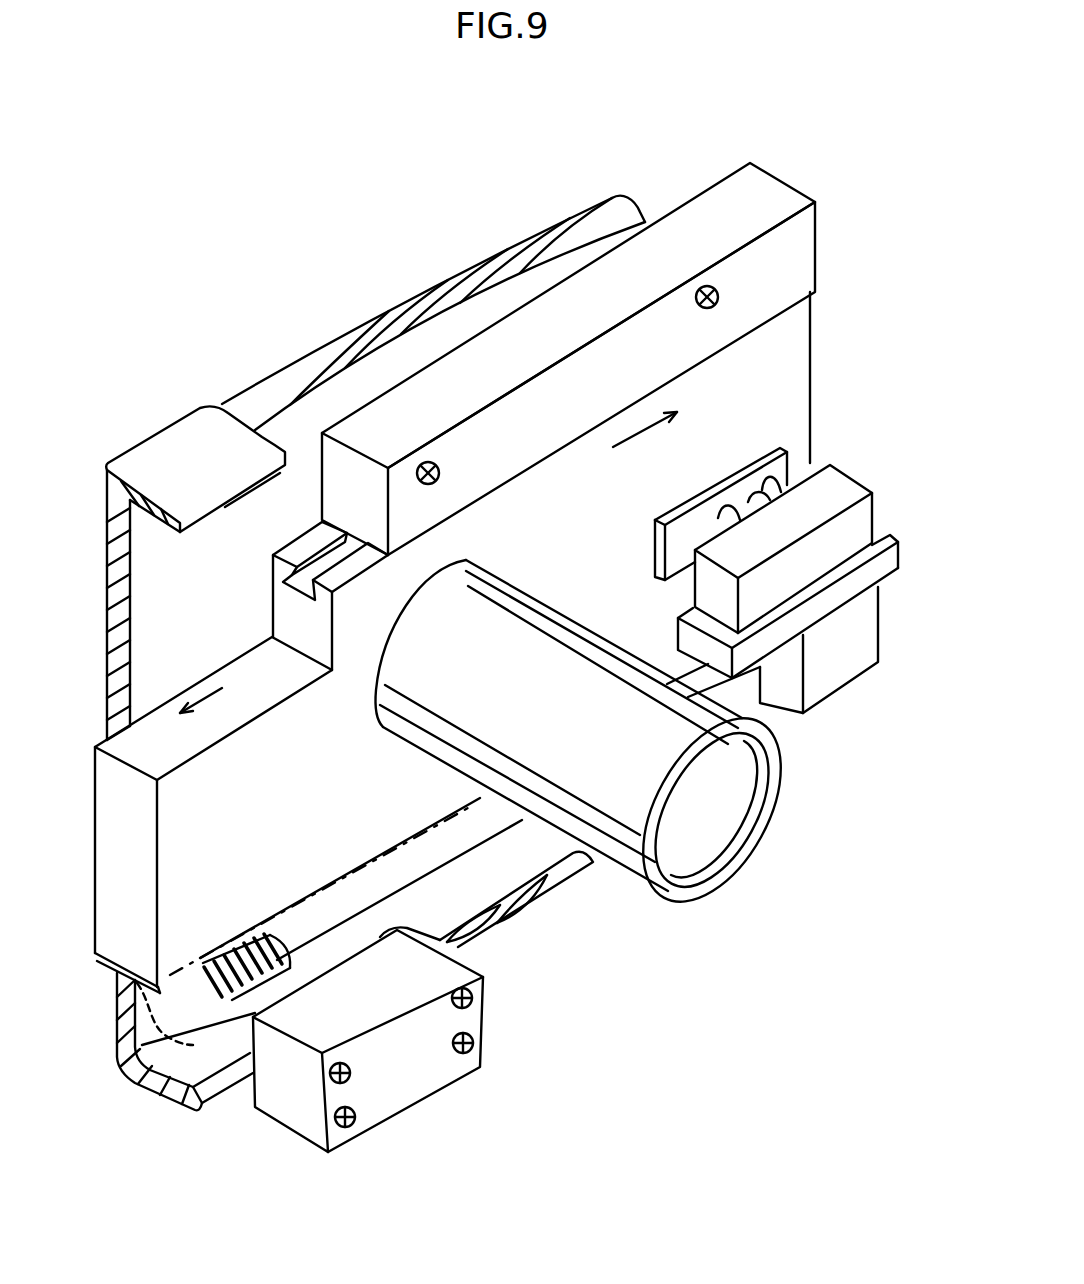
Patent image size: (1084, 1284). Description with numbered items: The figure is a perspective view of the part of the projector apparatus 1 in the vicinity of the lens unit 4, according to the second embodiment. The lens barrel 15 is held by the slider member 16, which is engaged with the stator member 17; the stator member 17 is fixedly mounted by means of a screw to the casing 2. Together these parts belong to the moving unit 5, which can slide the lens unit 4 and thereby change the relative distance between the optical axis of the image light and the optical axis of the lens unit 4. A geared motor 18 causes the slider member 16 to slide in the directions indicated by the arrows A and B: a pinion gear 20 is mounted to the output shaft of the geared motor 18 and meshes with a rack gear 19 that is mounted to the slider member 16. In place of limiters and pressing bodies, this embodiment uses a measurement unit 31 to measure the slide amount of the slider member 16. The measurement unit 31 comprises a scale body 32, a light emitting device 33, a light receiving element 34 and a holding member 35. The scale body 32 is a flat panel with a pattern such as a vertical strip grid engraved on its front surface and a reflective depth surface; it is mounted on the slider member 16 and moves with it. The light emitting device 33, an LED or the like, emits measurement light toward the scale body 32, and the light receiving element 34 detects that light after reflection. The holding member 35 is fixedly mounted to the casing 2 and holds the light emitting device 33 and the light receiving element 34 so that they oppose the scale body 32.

The projector apparatus 1 is at (416, 192).
The casing 2 is at (208, 467).
The lens unit 4 is at (707, 827).
The moving unit 5 is at (552, 948).
The barrel 15 is at (559, 707).
The slider member 16 is at (589, 533).
The stator member 17 is at (521, 370).
The geared motor 18 is at (392, 1000).
The rack gear 19 is at (177, 1045).
The pinion gear 20 is at (224, 950).
The measurement unit 31 is at (748, 430).
The scale body 32 is at (672, 518).
The light emitting device 33 is at (771, 481).
The light receiving element 34 is at (745, 522).
The holding member 35 is at (873, 577).